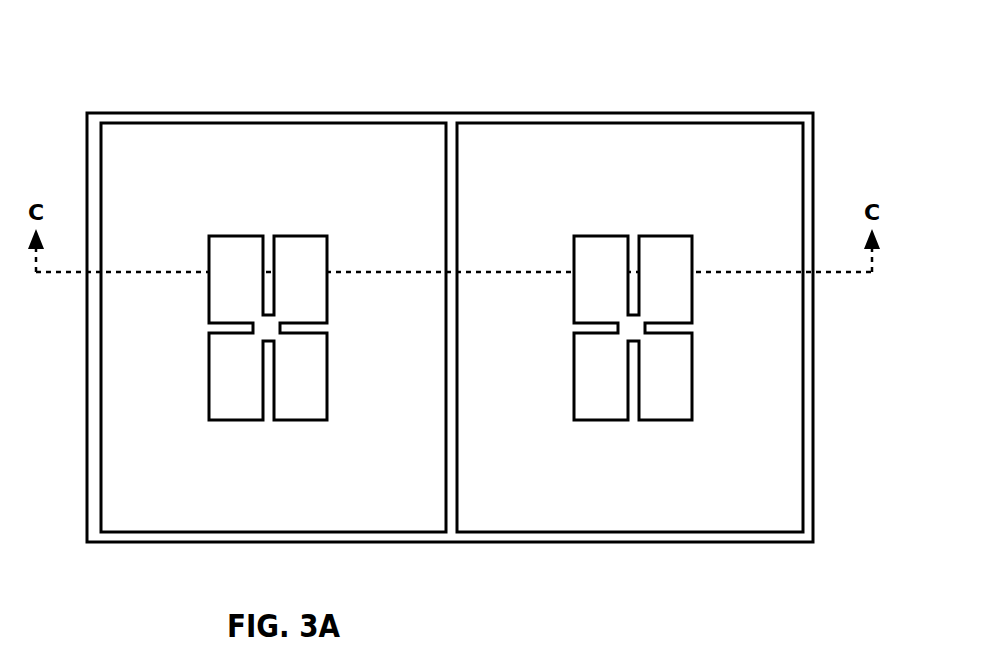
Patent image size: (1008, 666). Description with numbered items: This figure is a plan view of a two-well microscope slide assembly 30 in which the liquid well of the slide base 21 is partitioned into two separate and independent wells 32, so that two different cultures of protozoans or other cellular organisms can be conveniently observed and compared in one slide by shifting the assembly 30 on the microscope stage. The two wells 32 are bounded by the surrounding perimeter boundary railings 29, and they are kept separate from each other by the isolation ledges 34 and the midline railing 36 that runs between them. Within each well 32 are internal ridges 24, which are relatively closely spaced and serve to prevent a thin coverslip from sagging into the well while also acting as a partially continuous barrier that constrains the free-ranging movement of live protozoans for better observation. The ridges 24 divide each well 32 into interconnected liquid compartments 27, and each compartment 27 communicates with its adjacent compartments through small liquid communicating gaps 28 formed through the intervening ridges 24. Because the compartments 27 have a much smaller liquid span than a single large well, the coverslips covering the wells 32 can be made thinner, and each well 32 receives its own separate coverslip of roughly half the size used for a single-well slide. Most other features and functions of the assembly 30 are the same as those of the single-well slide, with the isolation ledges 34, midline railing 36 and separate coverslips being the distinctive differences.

The slide base 21 is at (200, 113).
The ridges 24 is at (263, 373).
The liquid compartment 27 is at (294, 258).
The gaps 28 is at (283, 335).
The perimeter boundary railings 29 is at (97, 178).
The microscope slide assembly 30 is at (768, 78).
The wells 32 is at (232, 237).
The isolation ledges 34 is at (174, 189).
The midline railing 36 is at (451, 197).